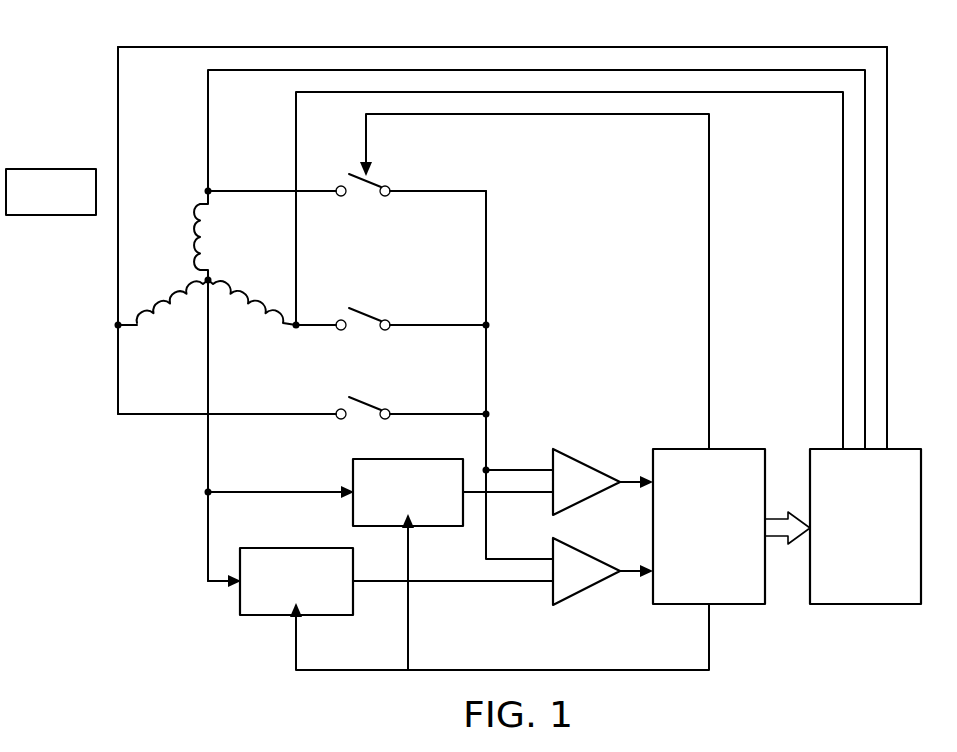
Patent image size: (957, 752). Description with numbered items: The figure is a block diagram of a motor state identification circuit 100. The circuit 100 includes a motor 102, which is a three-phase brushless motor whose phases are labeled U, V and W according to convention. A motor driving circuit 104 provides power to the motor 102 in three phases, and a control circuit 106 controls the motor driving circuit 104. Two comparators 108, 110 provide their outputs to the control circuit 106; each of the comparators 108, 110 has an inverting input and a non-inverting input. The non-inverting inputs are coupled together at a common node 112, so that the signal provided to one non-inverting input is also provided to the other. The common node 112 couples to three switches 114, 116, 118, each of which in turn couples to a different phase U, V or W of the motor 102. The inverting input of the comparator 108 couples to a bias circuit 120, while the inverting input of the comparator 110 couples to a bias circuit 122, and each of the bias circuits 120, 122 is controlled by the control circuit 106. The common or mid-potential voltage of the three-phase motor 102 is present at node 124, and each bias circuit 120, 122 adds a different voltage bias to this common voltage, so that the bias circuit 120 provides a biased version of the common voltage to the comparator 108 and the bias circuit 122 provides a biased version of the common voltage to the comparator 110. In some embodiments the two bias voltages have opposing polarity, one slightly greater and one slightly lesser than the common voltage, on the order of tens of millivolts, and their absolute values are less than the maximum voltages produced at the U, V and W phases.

The motor state identification circuit 100 is at (91, 54).
The motor 102 is at (52, 168).
The motor driving circuit 104 is at (847, 585).
The control circuit 106 is at (690, 570).
The comparator 108 is at (588, 460).
The comparator 110 is at (588, 590).
The common node 112 is at (491, 465).
The switch 114 is at (374, 182).
The switch 116 is at (367, 313).
The switch 118 is at (367, 402).
The bias circuit 120 is at (352, 505).
The bias circuit 122 is at (238, 593).
The node 124 is at (200, 498).